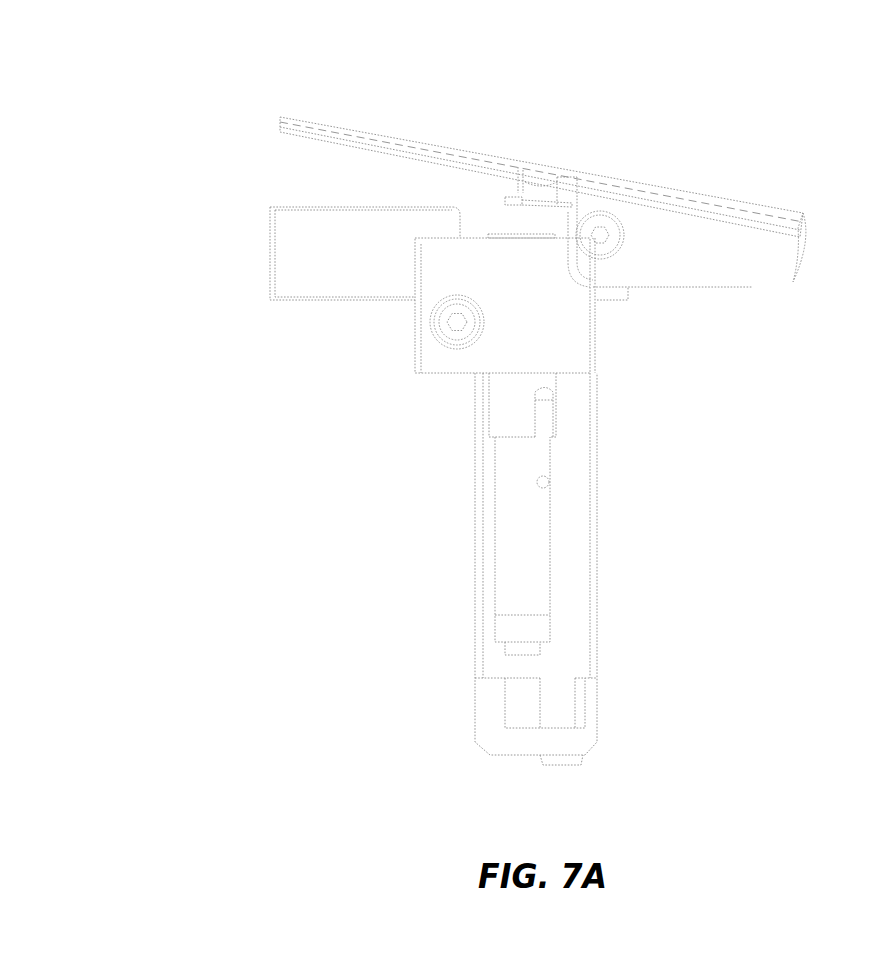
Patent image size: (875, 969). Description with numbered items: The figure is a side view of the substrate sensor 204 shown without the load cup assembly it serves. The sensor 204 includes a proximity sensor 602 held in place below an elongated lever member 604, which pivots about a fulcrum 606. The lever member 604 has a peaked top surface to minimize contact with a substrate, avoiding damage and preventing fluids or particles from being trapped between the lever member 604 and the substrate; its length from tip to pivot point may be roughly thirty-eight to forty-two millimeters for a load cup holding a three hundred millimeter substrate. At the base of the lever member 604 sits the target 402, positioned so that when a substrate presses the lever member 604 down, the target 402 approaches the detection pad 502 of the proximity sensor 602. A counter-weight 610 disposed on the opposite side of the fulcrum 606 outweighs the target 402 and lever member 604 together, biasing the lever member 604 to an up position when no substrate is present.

The sensor 204 is at (238, 125).
The lever member 604 is at (303, 122).
The fulcrum 606 is at (600, 212).
The detection pad 502 is at (500, 235).
The target 402 is at (525, 207).
The counter-weight 610 is at (798, 263).
The proximity sensor 602 is at (493, 552).